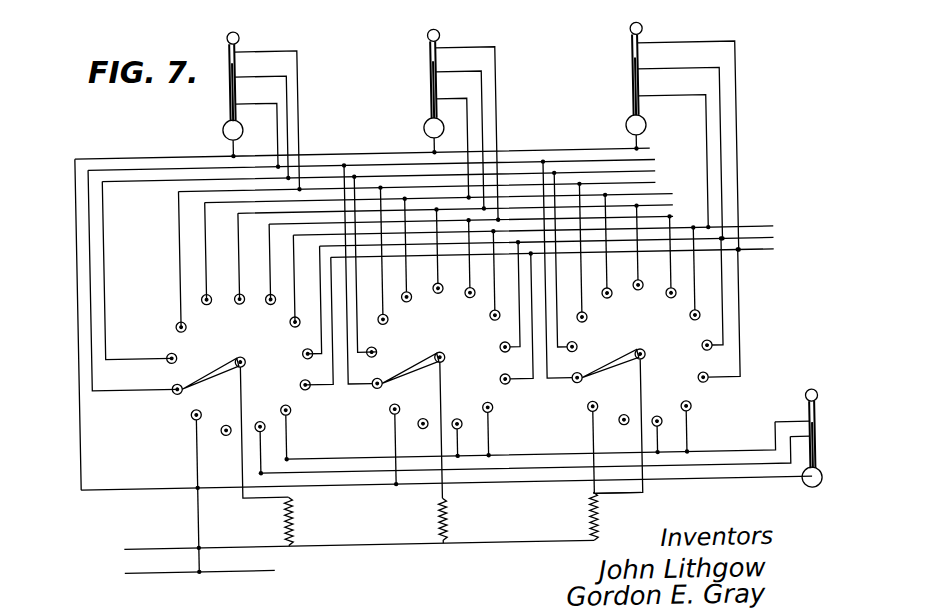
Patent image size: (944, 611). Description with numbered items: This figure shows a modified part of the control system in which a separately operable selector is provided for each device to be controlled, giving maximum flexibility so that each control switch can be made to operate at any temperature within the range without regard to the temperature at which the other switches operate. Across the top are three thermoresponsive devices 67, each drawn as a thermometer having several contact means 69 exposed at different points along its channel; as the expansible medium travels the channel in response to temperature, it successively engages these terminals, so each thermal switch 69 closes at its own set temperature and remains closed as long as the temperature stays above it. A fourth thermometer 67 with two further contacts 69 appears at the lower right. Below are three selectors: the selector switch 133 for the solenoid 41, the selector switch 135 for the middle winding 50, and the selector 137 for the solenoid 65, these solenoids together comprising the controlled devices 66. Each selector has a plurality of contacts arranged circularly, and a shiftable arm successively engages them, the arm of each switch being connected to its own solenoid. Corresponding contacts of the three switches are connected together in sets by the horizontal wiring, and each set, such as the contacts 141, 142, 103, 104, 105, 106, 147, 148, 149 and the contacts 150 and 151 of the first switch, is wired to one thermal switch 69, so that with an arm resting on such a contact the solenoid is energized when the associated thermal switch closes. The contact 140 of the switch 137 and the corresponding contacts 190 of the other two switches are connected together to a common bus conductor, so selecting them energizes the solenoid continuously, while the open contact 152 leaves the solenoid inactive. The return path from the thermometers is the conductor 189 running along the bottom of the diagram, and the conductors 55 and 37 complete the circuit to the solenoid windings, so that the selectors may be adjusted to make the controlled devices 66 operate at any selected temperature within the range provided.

The thermoresponsive device 67 is at (243, 33).
The contact means 69 is at (234, 101).
The stationary contact 103 is at (166, 327).
The stationary contact 104 is at (197, 295).
The stationary contact 105 is at (228, 291).
The stationary contact 106 is at (259, 290).
The selector switch contact 147 is at (307, 312).
The selector switch contact 148 is at (311, 344).
The selector switch contact 149 is at (312, 376).
The selector switch contact 141 is at (172, 390).
The selector switch contact 142 is at (167, 358).
The selector switch 133 is at (234, 411).
The selector switch 135 is at (440, 330).
The selector switch 137 is at (643, 325).
The contact 190 is at (189, 417).
The open contact 152 is at (216, 437).
The selector switch contact 151 is at (273, 448).
The selector switch contact 150 is at (303, 432).
The selector switch contact 140 is at (586, 411).
The conductor 189 is at (446, 479).
The conductor 55 is at (359, 534).
The conductor 37 is at (200, 584).
The solenoid 41 is at (290, 530).
The relay coil 50 is at (445, 525).
The solenoid 65 is at (610, 516).
The controlled devices 66 is at (646, 517).